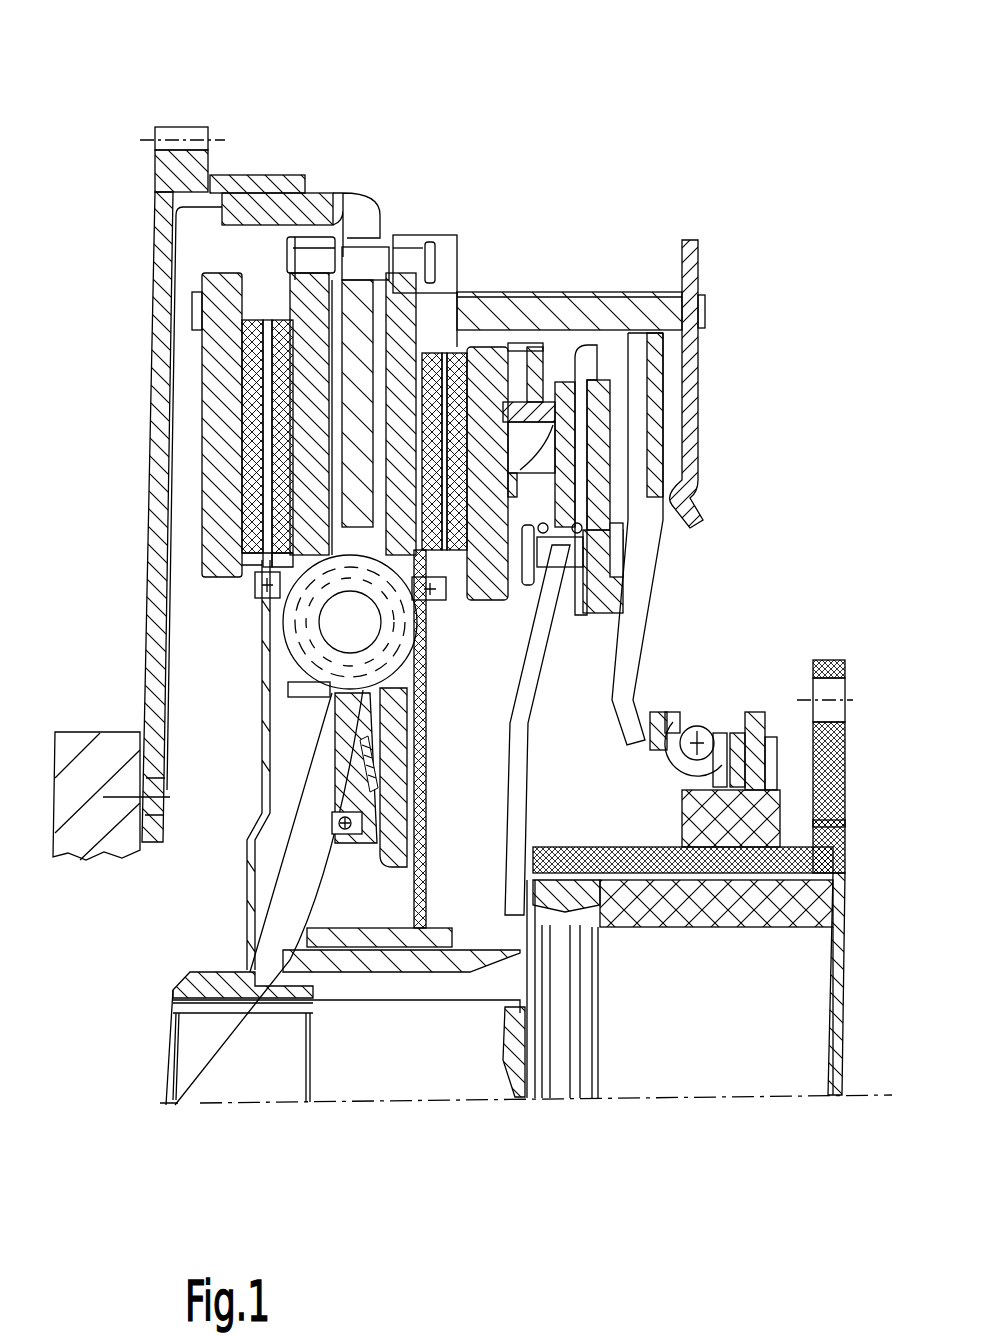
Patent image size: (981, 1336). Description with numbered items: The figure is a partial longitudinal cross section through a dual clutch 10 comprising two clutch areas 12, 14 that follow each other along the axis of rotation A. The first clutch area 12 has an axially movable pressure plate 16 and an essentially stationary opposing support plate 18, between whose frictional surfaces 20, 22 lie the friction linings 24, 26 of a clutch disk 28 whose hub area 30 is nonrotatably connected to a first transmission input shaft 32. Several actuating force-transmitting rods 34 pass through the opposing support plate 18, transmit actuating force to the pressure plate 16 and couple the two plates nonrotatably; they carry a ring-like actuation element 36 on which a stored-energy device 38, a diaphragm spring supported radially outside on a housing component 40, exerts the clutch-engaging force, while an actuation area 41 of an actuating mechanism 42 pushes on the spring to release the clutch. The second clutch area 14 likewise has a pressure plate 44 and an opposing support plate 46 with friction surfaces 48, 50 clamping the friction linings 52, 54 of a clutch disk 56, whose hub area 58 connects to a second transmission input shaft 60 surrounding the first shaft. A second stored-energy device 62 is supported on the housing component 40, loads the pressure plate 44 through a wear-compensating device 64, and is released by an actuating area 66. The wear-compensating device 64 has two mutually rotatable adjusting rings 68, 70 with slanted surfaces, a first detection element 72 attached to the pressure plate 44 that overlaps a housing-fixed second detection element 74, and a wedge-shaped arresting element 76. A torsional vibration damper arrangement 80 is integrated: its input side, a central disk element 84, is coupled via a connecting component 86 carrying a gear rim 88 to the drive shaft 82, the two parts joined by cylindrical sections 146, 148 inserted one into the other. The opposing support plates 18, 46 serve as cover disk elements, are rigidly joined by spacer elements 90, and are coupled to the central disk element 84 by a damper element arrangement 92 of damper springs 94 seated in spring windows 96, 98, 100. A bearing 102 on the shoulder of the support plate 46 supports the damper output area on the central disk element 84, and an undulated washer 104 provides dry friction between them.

The dual clutch 10 is at (533, 92).
The first clutch area 12 is at (232, 112).
The second clutch area 14 is at (541, 238).
The pressure plate 16 is at (218, 433).
The opposing support plate 18 is at (277, 493).
The frictional surface 20 is at (250, 385).
The frictional surface 22 is at (300, 503).
The friction lining 24 is at (258, 586).
The friction lining 26 is at (255, 600).
The clutch disk 28 is at (227, 825).
The hub area 30 is at (183, 1003).
The first transmission input shaft 32 is at (243, 1073).
The actuating force-transmitting rods 34 is at (577, 303).
The actuation element 36 is at (660, 395).
The stored-energy device 38 is at (660, 560).
The housing component 40 is at (578, 368).
The actuation area 41 is at (703, 690).
The actuating mechanism 42 is at (770, 655).
The pressure plate 44 is at (490, 358).
The opposing support plate 46 is at (458, 340).
The friction surface 48 is at (520, 455).
The friction surface 50 is at (525, 487).
The friction lining 52 is at (437, 612).
The friction lining 54 is at (470, 600).
The clutch disk 56 is at (452, 877).
The hub area 58 is at (367, 960).
The second transmission input shaft 60 is at (330, 945).
The stored-energy device 62 is at (507, 718).
The wear-compensating device 64 is at (703, 257).
The actuating area 66 is at (640, 948).
The adjusting ring 68 is at (460, 390).
The adjusting ring 70 is at (540, 425).
The first detection element 72 is at (525, 470).
The second detection element 74 is at (627, 292).
The arresting element 76 is at (655, 355).
The torsional vibration damper arrangement 80 is at (408, 132).
The drive shaft 82 is at (80, 832).
The central disk element 84 is at (363, 297).
The connecting component 86 is at (158, 330).
The gear rim 88 is at (165, 162).
The spacer elements 90 is at (345, 243).
The damper element arrangement 92 is at (312, 717).
The damper springs 94 is at (297, 640).
The spring window 96 is at (330, 692).
The spring window 98 is at (248, 893).
The spring window 100 is at (380, 700).
The bearing 102 is at (173, 1100).
The undulated washer 104 is at (183, 990).
The cylindrical section 146 is at (297, 187).
The cylindrical section 148 is at (248, 175).
The axis of rotation A is at (742, 1097).